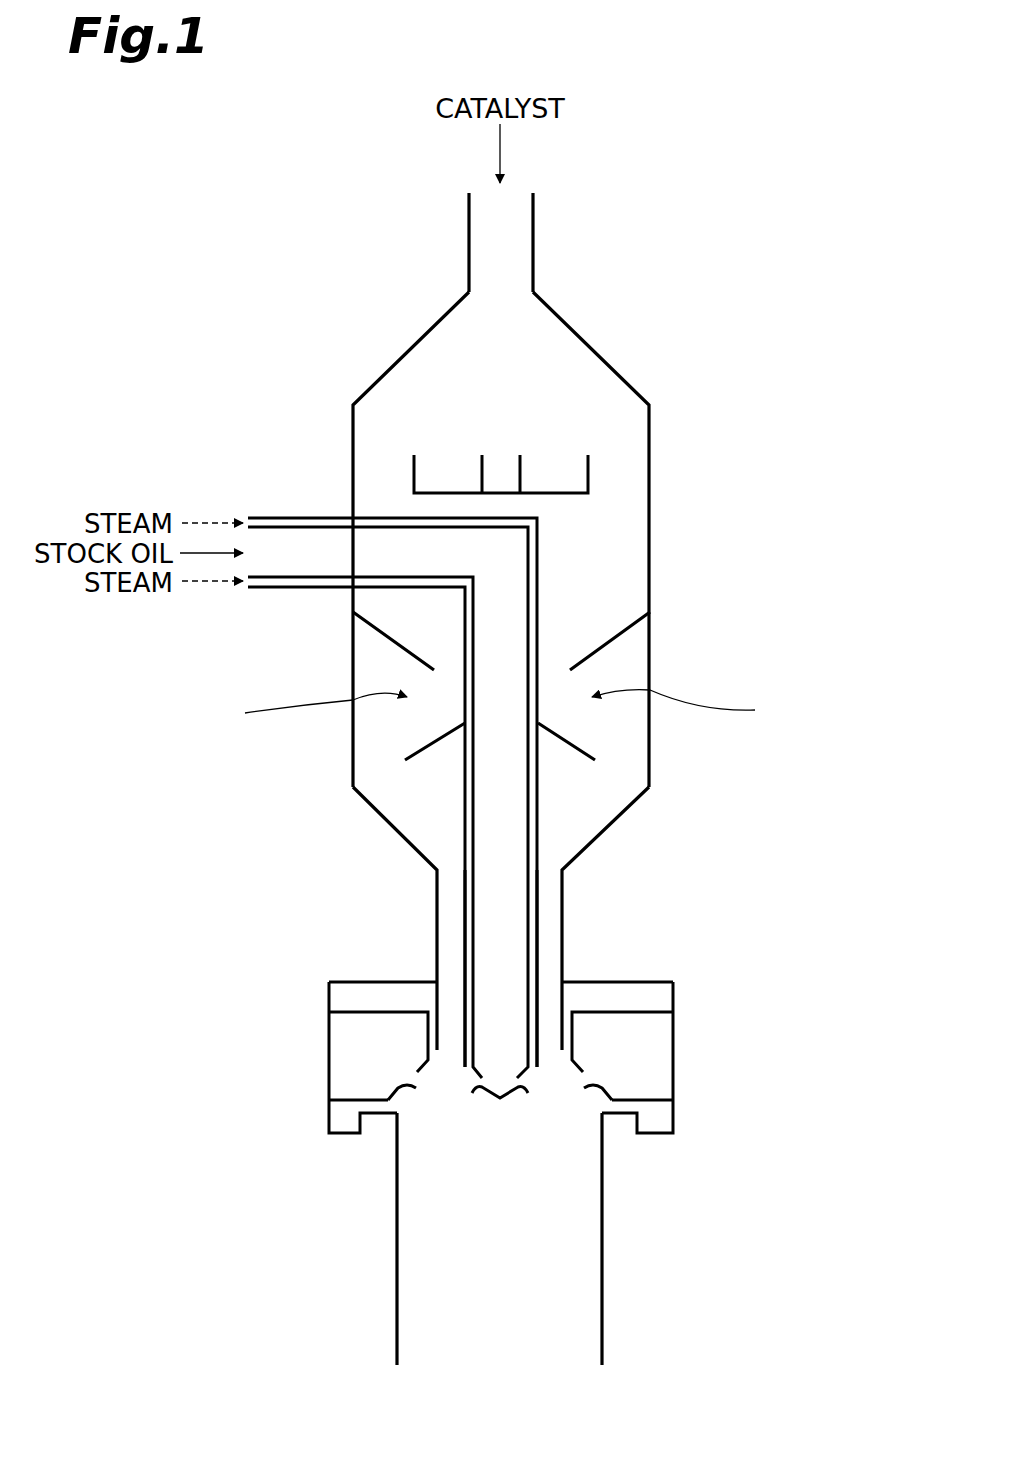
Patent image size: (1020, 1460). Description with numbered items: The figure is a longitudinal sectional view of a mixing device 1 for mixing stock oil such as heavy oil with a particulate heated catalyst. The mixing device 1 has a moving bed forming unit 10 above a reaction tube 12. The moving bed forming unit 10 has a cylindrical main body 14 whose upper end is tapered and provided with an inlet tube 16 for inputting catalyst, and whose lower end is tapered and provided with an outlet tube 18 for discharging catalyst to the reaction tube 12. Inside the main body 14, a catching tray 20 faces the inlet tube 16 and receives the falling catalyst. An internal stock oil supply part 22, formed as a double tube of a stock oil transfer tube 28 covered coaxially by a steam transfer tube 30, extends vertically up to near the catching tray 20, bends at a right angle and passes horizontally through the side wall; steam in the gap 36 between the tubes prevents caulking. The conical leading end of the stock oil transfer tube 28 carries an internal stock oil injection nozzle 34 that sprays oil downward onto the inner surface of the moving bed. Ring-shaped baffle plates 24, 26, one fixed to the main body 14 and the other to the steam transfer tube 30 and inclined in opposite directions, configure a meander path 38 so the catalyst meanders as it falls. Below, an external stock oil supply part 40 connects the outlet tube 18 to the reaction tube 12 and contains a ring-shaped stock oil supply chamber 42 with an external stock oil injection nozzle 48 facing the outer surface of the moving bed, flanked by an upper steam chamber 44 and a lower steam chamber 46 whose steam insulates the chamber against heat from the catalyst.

The mixing device 1 is at (707, 118).
The moving bed forming unit 10 is at (712, 385).
The reaction tube 12 is at (604, 1298).
The main body 14 is at (651, 587).
The inlet tube 16 is at (535, 245).
The outlet tube 18 is at (563, 895).
The catching tray 20 is at (584, 495).
The internal stock oil supply part 22 is at (193, 420).
The baffle plate 24 is at (382, 648).
The baffle plate 26 is at (400, 745).
The stock oil transfer tube 28 is at (296, 538).
The steam transfer tube 30 is at (260, 518).
The internal stock oil injection nozzle 34 is at (472, 1093).
The gap 36 is at (467, 935).
The meander path 38 is at (502, 710).
The external stock oil supply part 40 is at (213, 978).
The stock oil supply chamber 42 is at (330, 1066).
The upper steam chamber 44 is at (330, 1005).
The lower steam chamber 46 is at (330, 1123).
The external stock oil injection nozzle 48 is at (416, 1088).